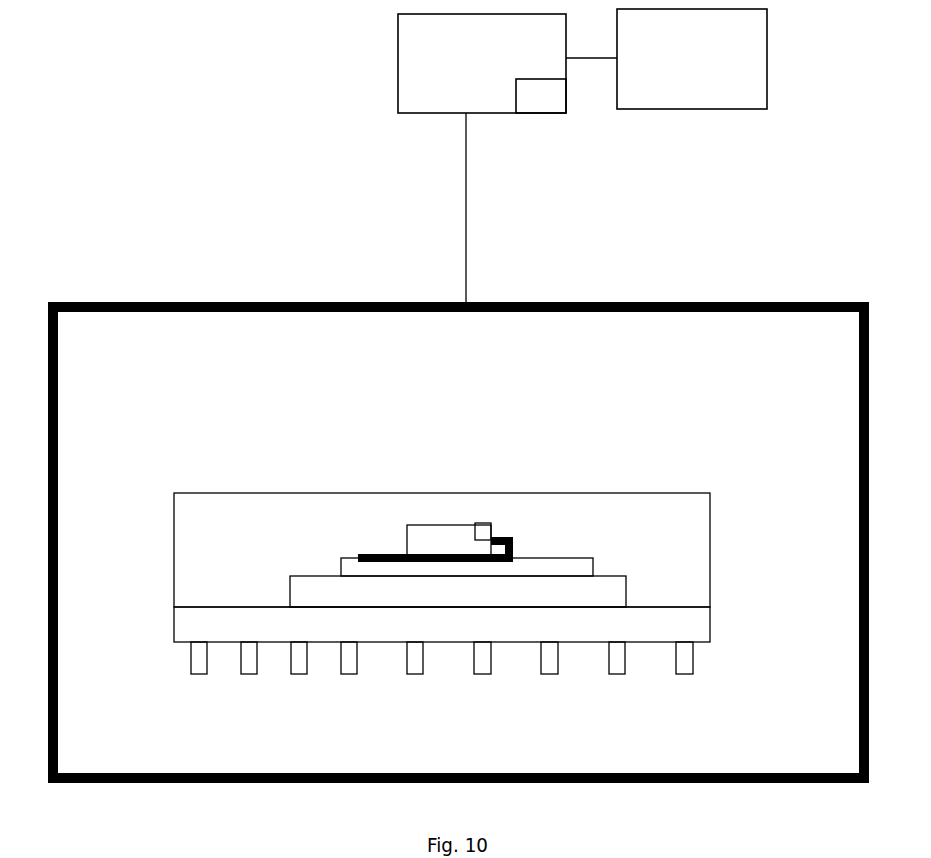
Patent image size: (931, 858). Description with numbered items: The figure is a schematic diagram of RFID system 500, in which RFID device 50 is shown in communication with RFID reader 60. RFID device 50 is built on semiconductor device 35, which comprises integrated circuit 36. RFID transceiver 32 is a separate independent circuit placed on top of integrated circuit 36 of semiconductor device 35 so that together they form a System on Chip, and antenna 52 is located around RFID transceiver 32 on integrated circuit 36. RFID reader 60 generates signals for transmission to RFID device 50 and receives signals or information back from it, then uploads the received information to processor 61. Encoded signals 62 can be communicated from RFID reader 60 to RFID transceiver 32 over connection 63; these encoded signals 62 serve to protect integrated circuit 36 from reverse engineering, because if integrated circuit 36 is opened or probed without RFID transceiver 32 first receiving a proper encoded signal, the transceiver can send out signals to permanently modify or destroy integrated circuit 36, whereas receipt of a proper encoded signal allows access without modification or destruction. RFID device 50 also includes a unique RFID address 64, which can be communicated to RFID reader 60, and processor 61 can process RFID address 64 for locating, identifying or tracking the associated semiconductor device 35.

The RFID system 500 is at (57, 36).
The RFID reader 60 is at (507, 63).
The encoded signals 62 is at (541, 96).
The processor 61 is at (684, 109).
The connection 63 is at (466, 169).
The RFID device 50 is at (156, 265).
The semiconductor device 35 is at (710, 518).
The integrated circuit 36 is at (617, 568).
The RFID transceiver 32 is at (449, 515).
The RFID address 64 is at (482, 523).
The antenna 52 is at (499, 536).